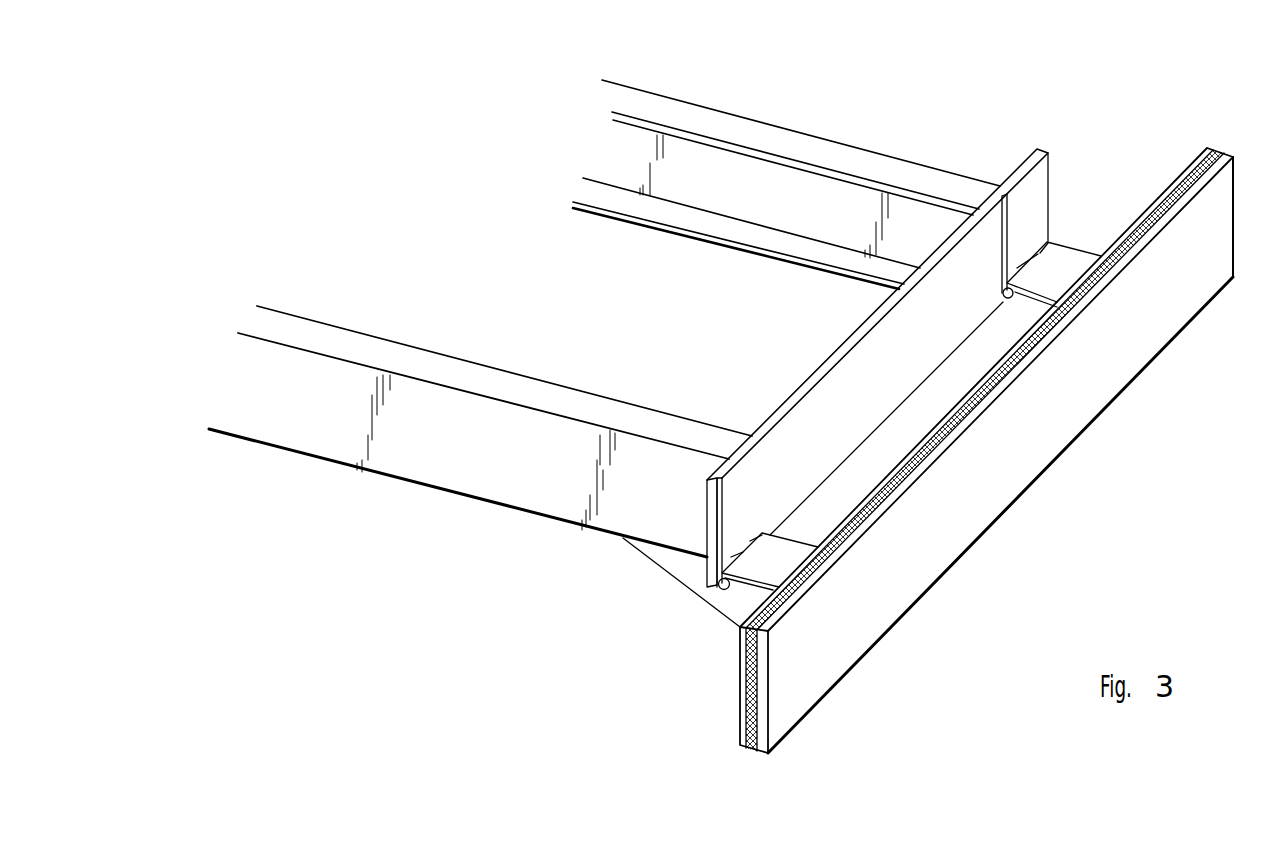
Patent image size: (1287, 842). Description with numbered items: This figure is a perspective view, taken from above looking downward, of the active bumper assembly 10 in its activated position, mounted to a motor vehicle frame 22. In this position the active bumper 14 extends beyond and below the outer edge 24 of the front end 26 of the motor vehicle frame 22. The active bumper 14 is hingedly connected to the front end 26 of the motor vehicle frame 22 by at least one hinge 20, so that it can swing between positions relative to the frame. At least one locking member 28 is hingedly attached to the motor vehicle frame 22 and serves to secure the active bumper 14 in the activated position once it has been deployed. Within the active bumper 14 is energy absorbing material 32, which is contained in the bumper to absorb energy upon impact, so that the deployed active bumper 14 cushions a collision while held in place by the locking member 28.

The active bumper assembly 10 is at (1125, 442).
The active bumper 14 is at (980, 513).
The hinge 20 is at (1072, 258).
The motor vehicle frame 22 is at (740, 127).
The outer edge 24 is at (823, 408).
The front end 26 is at (838, 345).
The locking member 28 is at (995, 333).
The energy absorbing material 32 is at (747, 747).